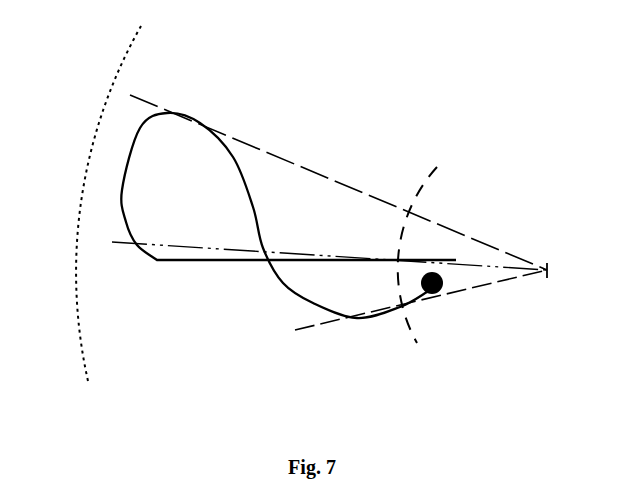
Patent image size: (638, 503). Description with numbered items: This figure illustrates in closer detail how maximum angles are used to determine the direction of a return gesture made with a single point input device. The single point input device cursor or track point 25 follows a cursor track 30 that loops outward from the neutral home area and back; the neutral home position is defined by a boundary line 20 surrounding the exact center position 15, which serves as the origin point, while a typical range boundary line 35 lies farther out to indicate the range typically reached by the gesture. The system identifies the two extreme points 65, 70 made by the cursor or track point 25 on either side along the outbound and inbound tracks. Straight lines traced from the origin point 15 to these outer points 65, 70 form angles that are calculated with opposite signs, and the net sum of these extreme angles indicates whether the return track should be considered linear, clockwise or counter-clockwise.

The exact center position 15 is at (547, 264).
The boundary line 20 is at (432, 167).
The single point input device cursor or track point 25 is at (437, 293).
The cursor track 30 is at (237, 160).
The typical range boundary line 35 is at (82, 180).
The extreme point 65 is at (177, 112).
The extreme point 70 is at (358, 318).